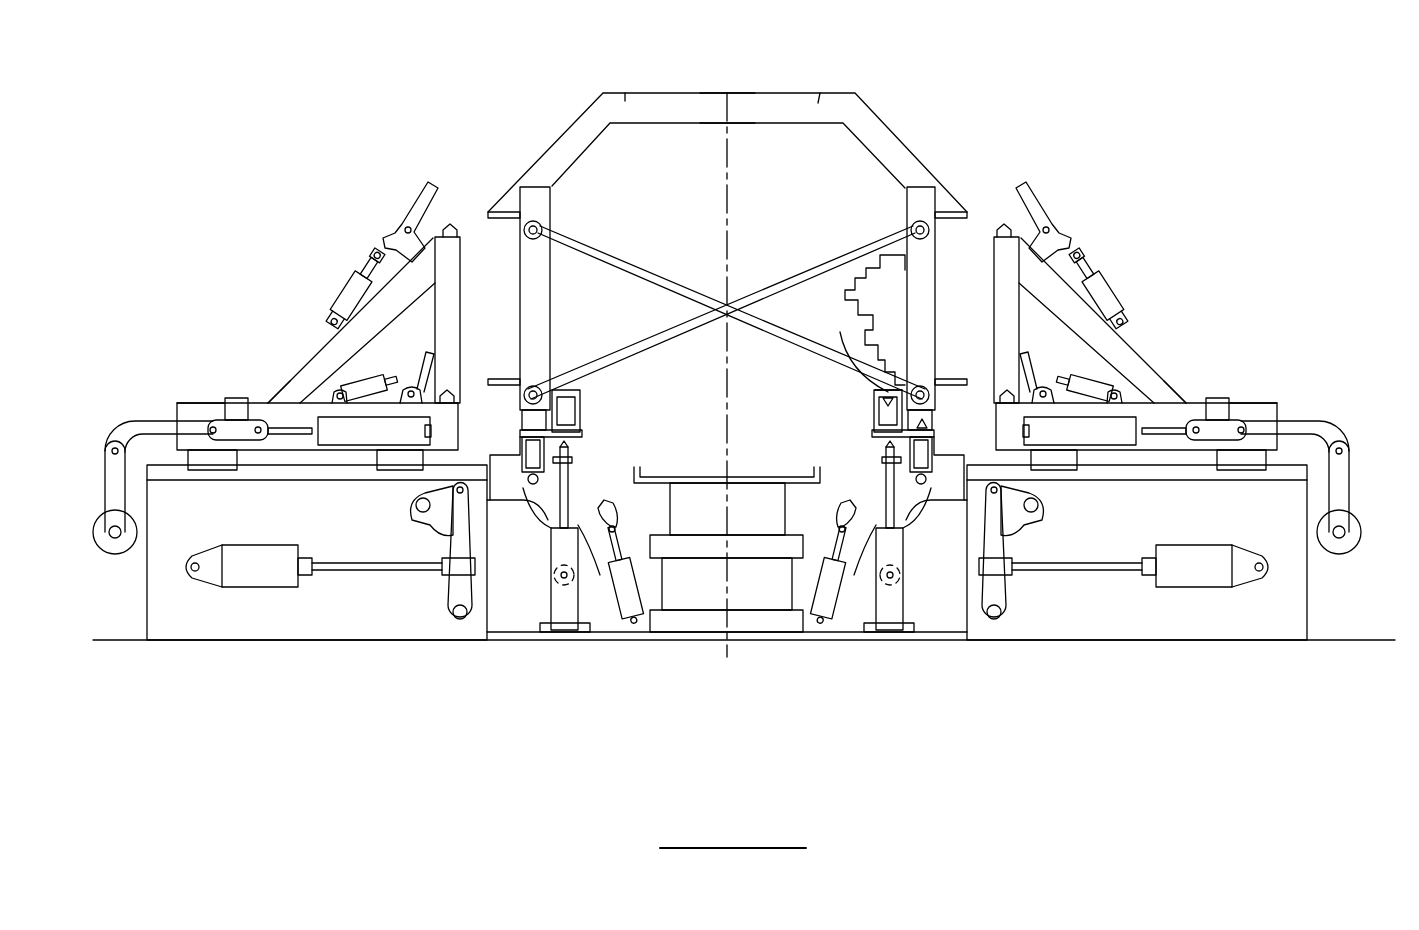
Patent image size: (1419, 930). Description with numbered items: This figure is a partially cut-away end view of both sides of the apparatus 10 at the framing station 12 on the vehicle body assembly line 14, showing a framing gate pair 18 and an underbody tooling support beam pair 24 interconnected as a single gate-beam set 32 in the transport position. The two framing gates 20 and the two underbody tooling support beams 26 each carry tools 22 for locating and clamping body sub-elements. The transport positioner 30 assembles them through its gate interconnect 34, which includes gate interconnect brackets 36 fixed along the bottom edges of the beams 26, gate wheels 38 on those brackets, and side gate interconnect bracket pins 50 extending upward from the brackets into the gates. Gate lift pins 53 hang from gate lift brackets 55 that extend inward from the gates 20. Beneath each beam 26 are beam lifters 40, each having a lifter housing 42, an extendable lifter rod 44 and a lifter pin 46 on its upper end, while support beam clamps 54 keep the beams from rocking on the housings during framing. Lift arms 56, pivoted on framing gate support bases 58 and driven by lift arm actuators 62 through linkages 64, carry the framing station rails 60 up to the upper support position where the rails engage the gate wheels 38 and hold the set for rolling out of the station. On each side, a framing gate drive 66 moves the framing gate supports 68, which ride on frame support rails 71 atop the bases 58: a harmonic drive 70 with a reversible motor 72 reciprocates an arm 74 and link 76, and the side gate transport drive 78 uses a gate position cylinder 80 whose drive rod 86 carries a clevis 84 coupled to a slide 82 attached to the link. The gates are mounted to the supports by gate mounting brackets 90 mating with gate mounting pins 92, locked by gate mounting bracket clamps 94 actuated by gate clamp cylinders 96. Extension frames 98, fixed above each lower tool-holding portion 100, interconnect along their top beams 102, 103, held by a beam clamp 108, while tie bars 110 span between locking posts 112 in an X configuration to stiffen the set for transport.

The apparatus 10 is at (1207, 153).
The framing station 12 is at (318, 197).
The vehicle body assembly line 14 is at (733, 513).
The framing gate pair 18 is at (737, 91).
The framing gate 20 is at (727, 136).
The tools 22 is at (860, 288).
The underbody tooling support beam pair 24 is at (586, 410).
The underbody tooling support beam 26 is at (727, 407).
The transport positioner 30 is at (513, 518).
The gate-beam set 32 is at (915, 144).
The gate interconnect 34 is at (729, 370).
The gate interconnect bracket 36 is at (583, 434).
The gate wheel 38 is at (520, 456).
The beam lifter 40 is at (587, 610).
The lifter housing 42 is at (558, 602).
The lifter rod 44 is at (570, 527).
The lifter pin 46 is at (573, 460).
The side gate interconnect bracket pin 50 is at (937, 436).
The gate lift pin 53 is at (880, 400).
The support beam clamp 54 is at (622, 528).
The gate lift bracket 55 is at (873, 392).
The lift arm 56 is at (443, 532).
The framing gate support base 58 is at (333, 639).
The framing station rail 60 is at (718, 559).
The lift arm actuator 62 is at (247, 549).
The linkage 64 is at (455, 589).
The framing gate drive 66 is at (132, 494).
The framing gate support 68 is at (729, 320).
The harmonic drive 70 is at (122, 557).
The frame support rail 71 is at (725, 434).
The reversible motor 72 is at (107, 549).
The arm 74 is at (736, 513).
The link 76 is at (198, 402).
The side gate transport drive 78 is at (343, 447).
The gate position cylinder 80 is at (699, 465).
The slide 82 is at (235, 397).
The clevis 84 is at (266, 418).
The drive rod 86 is at (291, 378).
The gate mounting bracket 90 is at (497, 210).
The gate mounting pin 92 is at (448, 225).
The gate mounting bracket clamp 94 is at (418, 215).
The gate clamp cylinder 96 is at (354, 285).
The extension frame 98 is at (732, 83).
The lower tool-holding portion 100 is at (565, 252).
The top beam 102 is at (712, 118).
The top beam 103 is at (738, 119).
The beam clamp 108 is at (712, 91).
The tie bar 110 is at (726, 308).
The locking post 112 is at (548, 226).